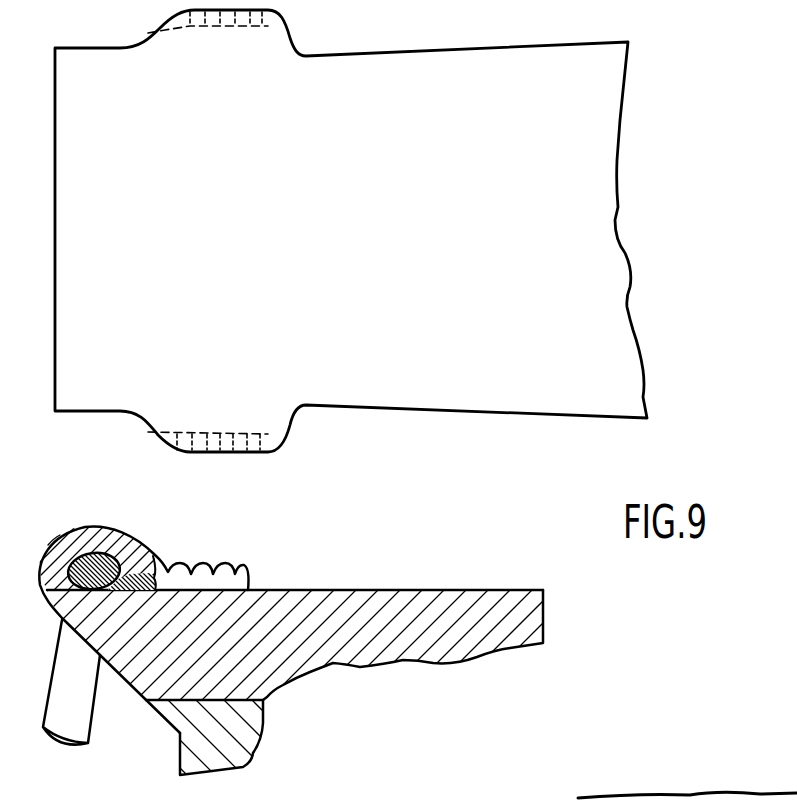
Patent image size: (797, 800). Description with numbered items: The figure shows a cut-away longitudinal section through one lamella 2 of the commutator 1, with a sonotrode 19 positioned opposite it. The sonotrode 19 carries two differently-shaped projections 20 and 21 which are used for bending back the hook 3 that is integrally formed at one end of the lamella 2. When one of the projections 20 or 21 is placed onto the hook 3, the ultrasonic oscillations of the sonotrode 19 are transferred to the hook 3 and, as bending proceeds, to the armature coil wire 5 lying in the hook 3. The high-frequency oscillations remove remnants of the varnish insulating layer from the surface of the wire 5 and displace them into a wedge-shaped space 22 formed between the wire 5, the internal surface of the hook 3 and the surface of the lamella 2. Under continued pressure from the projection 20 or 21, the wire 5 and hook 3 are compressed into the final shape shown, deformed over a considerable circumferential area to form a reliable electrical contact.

The commutator 1 is at (447, 593).
The lamella 2 is at (543, 626).
The hook 3 is at (83, 532).
The armature coil wire 5 is at (100, 560).
The sonotrode 19 is at (385, 80).
The projection 20 is at (270, 438).
The projection 21 is at (270, 15).
The wedge-shaped space 22 is at (130, 570).